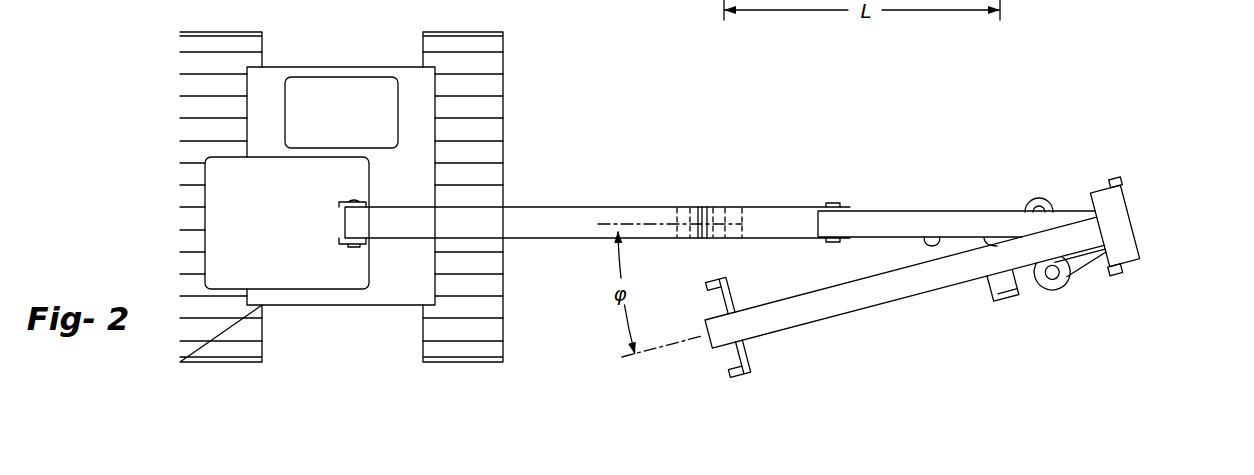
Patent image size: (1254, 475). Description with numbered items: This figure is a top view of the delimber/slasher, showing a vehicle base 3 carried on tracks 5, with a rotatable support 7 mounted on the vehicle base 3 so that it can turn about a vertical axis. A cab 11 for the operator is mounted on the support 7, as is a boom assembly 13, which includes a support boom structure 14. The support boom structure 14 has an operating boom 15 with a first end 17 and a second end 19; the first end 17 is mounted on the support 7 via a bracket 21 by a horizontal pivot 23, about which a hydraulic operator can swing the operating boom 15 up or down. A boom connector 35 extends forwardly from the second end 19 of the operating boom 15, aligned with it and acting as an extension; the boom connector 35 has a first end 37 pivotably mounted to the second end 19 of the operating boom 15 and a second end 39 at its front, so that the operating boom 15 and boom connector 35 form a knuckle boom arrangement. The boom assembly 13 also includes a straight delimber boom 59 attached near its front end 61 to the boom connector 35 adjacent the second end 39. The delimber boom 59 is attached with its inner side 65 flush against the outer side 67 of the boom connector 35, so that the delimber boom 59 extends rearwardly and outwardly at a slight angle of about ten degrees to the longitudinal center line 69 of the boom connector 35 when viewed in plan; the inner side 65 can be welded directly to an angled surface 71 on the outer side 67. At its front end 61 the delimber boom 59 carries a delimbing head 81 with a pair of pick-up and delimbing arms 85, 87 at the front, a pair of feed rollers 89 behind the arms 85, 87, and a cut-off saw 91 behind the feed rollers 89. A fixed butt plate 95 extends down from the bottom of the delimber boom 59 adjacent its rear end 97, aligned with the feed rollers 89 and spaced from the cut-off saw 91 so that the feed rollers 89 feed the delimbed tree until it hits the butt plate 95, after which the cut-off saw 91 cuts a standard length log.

The vehicle base 3 is at (299, 144).
The tracks 5 is at (485, 380).
The rotatable support 7 is at (369, 68).
The cab 11 is at (318, 90).
The boom assembly 13 is at (553, 206).
The support boom structure 14 is at (878, 210).
The operating boom 15 is at (626, 207).
The first end 17 is at (345, 222).
The second end 19 is at (851, 205).
The bracket 21 is at (343, 248).
The horizontal pivot 23 is at (353, 248).
The boom connector 35 is at (905, 210).
The first end 37 is at (818, 225).
The second end 39 is at (1080, 212).
The delimber boom 59 is at (849, 314).
The front end 61 is at (1135, 228).
The inner side 65 is at (768, 303).
The outer side 67 is at (930, 245).
The longitudinal center line 69 is at (657, 224).
The angled surface 71 is at (990, 240).
The delimbing head 81 is at (1134, 197).
The pick-up and delimbing arm 85 is at (1115, 177).
The pick-up and delimbing arm 87 is at (1116, 277).
The feed rollers 89 is at (1038, 200).
The cut-off saw 91 is at (1008, 296).
The butt plate 95 is at (747, 362).
The rear end 97 is at (707, 338).